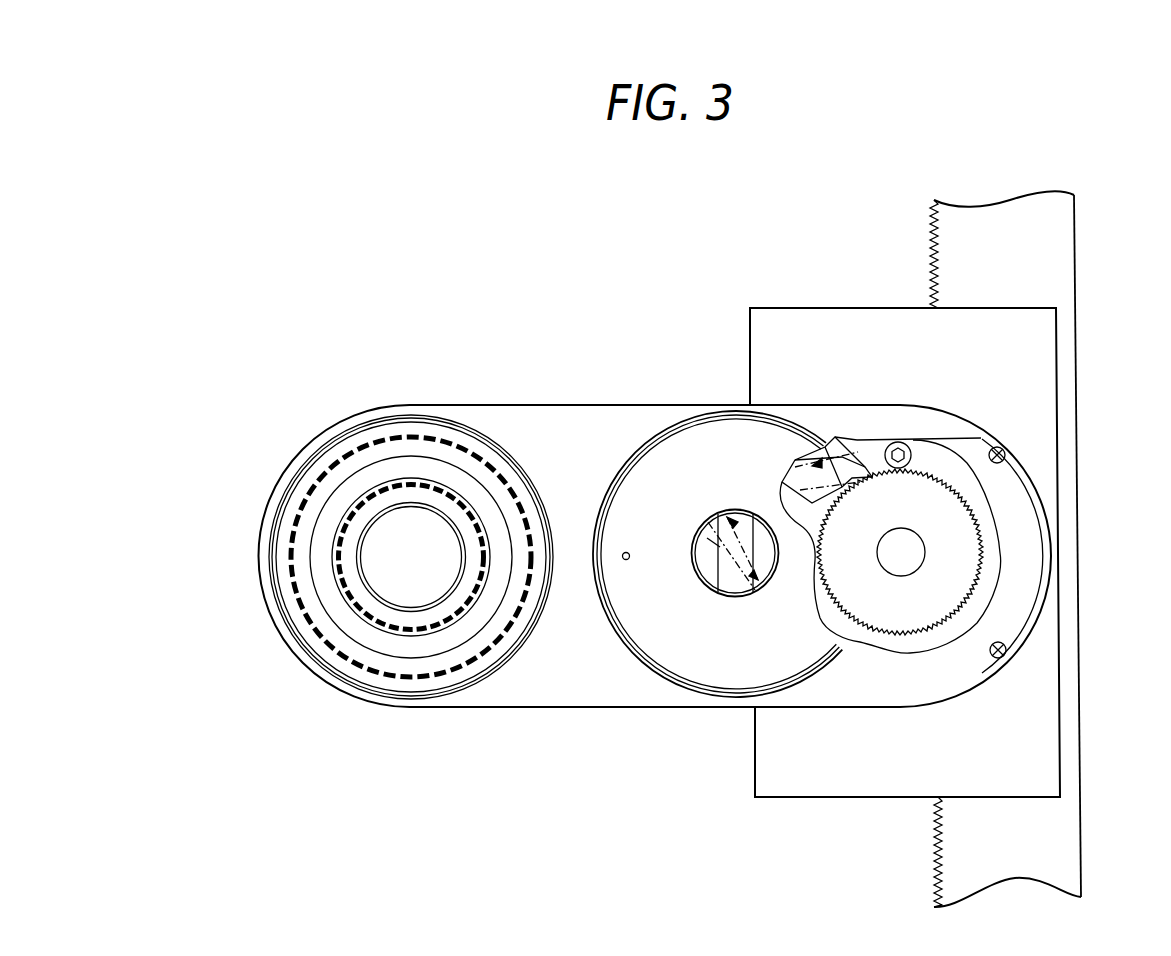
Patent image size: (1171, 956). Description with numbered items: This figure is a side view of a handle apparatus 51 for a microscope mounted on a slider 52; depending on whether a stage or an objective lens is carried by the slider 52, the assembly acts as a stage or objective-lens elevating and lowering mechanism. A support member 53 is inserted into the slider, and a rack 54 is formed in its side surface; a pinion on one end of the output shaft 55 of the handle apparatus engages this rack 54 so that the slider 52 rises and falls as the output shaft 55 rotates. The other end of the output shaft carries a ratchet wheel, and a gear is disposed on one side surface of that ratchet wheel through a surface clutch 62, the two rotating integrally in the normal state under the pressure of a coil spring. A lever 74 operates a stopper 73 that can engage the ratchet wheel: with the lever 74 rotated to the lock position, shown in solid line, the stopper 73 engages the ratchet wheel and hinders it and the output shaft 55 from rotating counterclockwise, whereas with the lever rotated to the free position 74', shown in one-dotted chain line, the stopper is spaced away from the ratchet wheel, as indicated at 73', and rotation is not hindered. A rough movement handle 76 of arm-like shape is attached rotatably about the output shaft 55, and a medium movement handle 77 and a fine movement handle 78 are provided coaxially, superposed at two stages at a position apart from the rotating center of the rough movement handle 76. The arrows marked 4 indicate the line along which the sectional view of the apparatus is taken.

The section line 4- 4 is at (244, 558).
The handle apparatus 51 is at (792, 270).
The slider 52 is at (802, 795).
The support member 53 is at (1070, 330).
The rack 54 is at (935, 888).
The output shaft 55 is at (910, 549).
The surface clutch 62 is at (895, 617).
The stopper 73 is at (832, 413).
The pawl in released position 73' is at (821, 414).
The lever 74 is at (717, 584).
The lever in free position 74' is at (661, 645).
The rough movement handle 76 is at (555, 405).
The medium movement handle 77 is at (358, 658).
The fine movement handle 78 is at (358, 597).